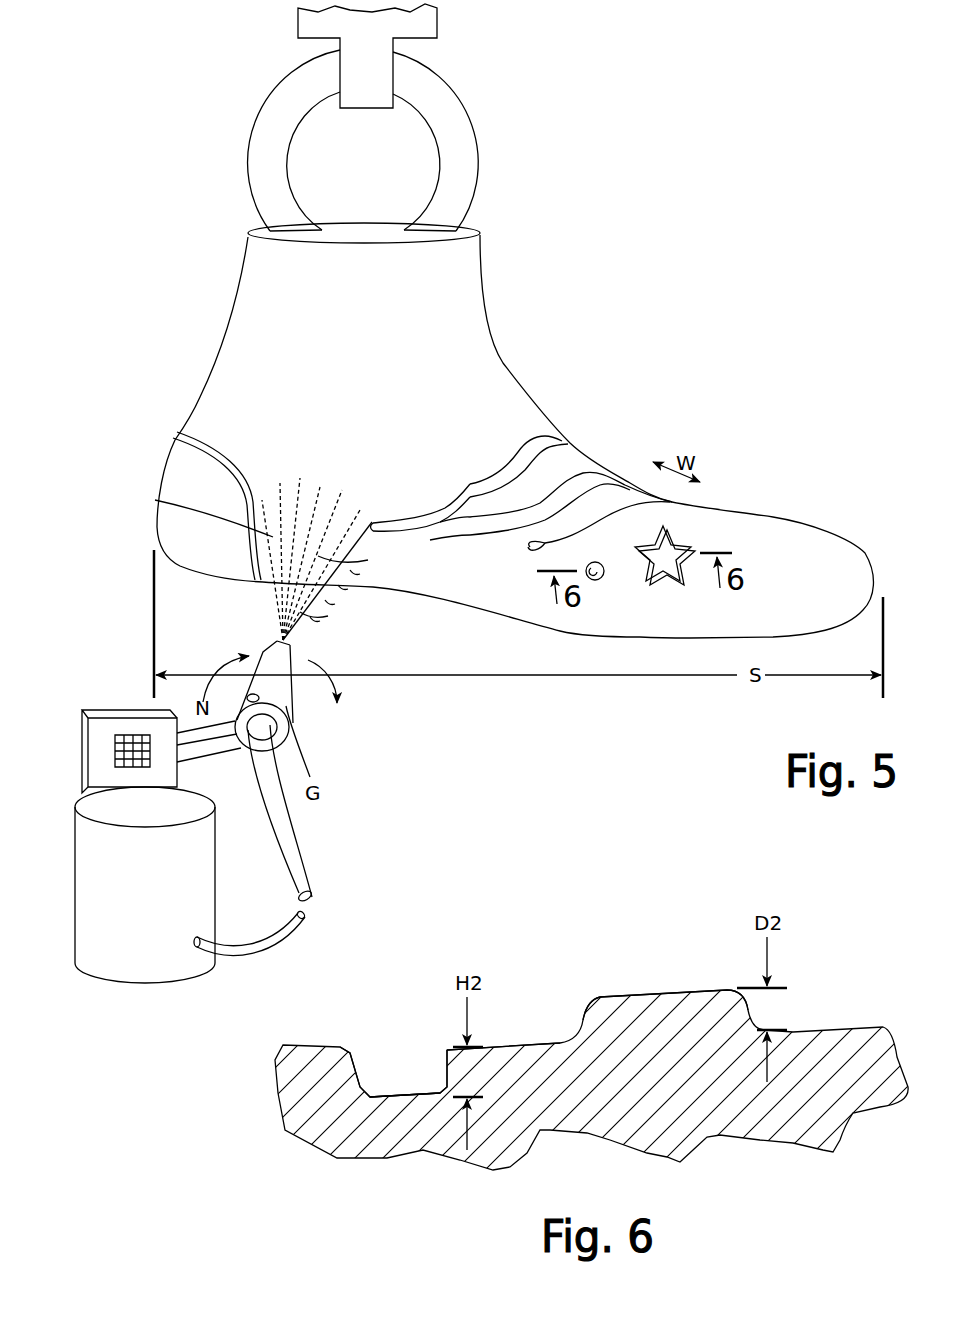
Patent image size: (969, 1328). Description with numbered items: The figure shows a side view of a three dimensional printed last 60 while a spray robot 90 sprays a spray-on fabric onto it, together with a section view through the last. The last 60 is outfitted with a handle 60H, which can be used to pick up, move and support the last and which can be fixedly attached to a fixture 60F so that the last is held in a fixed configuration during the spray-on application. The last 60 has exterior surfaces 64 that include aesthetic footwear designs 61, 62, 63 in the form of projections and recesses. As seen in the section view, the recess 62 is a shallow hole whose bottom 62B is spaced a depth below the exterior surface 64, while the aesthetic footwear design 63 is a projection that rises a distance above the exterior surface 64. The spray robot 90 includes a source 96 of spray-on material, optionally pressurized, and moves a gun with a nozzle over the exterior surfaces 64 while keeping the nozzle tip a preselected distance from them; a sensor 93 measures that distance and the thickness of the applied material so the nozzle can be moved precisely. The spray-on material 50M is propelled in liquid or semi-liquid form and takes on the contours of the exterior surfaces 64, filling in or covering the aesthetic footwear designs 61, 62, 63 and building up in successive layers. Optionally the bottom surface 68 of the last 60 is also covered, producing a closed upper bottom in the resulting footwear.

In FIG. 5, the last 60 is at (490, 330).
In FIG. 6, the last 60 is at (240, 1052).
In FIG. 5, the fixture 60F is at (437, 32).
In FIG. 5, the handle 60H is at (467, 172).
In FIG. 5, the exterior surface 64 is at (493, 412).
In FIG. 6, the exterior surface 64 is at (522, 1043).
In FIG. 5, the aesthetic footwear design 61 is at (470, 508).
In FIG. 5, the recess 62 is at (598, 582).
In FIG. 6, the recess 62 is at (362, 1043).
In FIG. 6, the bottom 62B is at (380, 1097).
In FIG. 5, the aesthetic footwear design 63 is at (667, 580).
In FIG. 6, the aesthetic footwear design 63 is at (650, 990).
In FIG. 5, the bottom surface 68 is at (462, 608).
In FIG. 5, the spray-on material 50M is at (278, 537).
In FIG. 5, the spray robot 90 is at (217, 787).
In FIG. 5, the sensor 93 is at (290, 707).
In FIG. 5, the source 96 is at (87, 876).